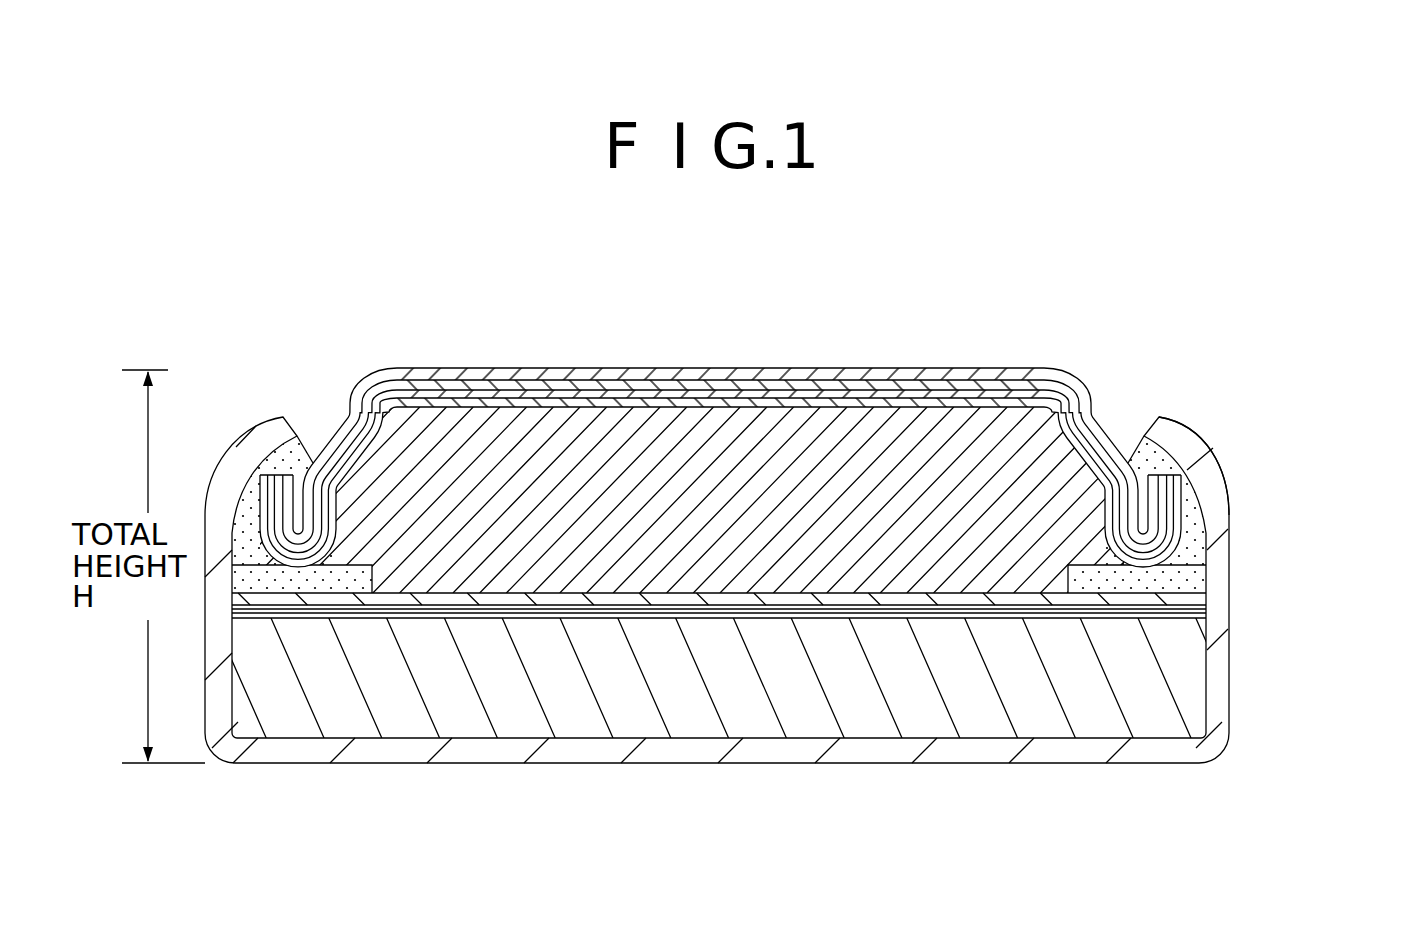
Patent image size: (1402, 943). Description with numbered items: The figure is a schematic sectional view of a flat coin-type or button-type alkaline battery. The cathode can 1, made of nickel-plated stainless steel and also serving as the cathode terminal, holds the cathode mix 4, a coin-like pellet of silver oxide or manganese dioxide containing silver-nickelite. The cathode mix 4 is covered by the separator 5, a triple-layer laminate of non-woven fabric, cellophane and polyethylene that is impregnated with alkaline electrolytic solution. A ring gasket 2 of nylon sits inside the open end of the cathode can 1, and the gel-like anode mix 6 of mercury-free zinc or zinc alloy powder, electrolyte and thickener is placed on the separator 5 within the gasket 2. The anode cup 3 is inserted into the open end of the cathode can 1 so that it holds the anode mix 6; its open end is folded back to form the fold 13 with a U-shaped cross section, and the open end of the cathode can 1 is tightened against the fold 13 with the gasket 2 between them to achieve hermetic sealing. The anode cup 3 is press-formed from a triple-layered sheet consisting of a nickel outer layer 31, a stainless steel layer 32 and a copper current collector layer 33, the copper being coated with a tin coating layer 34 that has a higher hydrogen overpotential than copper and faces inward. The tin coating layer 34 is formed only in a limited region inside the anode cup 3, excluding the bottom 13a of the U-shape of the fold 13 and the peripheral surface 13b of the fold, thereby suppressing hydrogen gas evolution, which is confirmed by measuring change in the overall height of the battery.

The cathode can 1 is at (323, 750).
The gasket 2 is at (1136, 457).
The anode cup 3 is at (720, 401).
The nickel outer layer 31 is at (436, 377).
The stainless steel layer 32 is at (488, 386).
The current collector layer 33 is at (558, 400).
The tin coating layer 34 is at (714, 410).
The cathode mix 4 is at (567, 715).
The separator 5 is at (843, 597).
The anode mix 6 is at (880, 437).
The fold 13 is at (810, 514).
The bottom of the U-shape of the fold 13a is at (1153, 569).
The peripheral surface of the fold 13b is at (1182, 512).